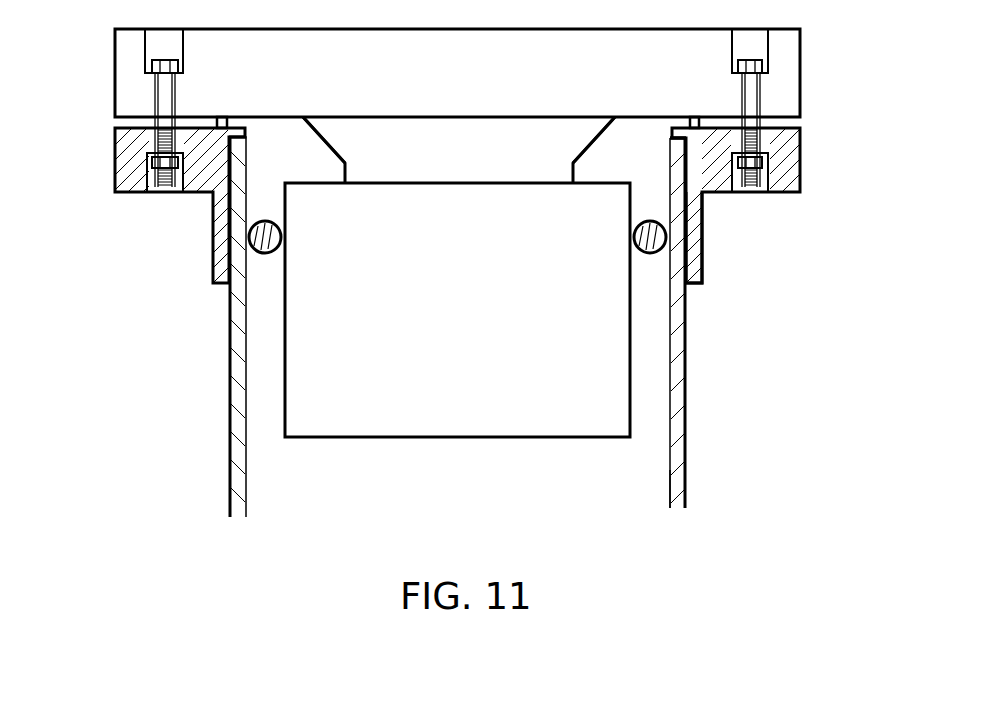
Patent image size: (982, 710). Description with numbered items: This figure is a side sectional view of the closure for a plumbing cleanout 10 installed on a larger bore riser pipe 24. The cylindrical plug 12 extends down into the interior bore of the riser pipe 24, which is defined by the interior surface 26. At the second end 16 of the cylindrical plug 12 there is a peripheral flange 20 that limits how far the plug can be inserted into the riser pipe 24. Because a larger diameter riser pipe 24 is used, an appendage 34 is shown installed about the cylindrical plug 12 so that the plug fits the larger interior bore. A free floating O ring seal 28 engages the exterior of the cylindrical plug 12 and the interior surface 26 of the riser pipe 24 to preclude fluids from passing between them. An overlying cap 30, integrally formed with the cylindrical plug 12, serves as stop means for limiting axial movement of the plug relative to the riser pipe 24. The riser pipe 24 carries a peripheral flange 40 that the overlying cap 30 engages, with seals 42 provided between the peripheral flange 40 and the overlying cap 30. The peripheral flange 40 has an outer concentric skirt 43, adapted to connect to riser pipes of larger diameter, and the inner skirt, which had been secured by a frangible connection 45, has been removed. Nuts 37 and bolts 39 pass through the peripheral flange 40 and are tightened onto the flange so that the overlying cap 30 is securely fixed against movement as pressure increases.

The closure for a plumbing cleanout 10 is at (155, 335).
The cylindrical plug 12 is at (448, 182).
The second end 16 is at (353, 137).
The peripheral flange 20 is at (580, 133).
The riser pipe 24 is at (688, 448).
The interior surface 26 is at (668, 477).
The O ring seal 28 is at (636, 231).
The overlying cap 30 is at (775, 83).
The appendage 34 is at (500, 415).
The nut 37 is at (148, 192).
The bolt 39 is at (157, 95).
The peripheral flange 40 is at (130, 165).
The seal 42 is at (684, 117).
The outer concentric skirt 43 is at (704, 283).
The frangible connection 45 is at (676, 133).